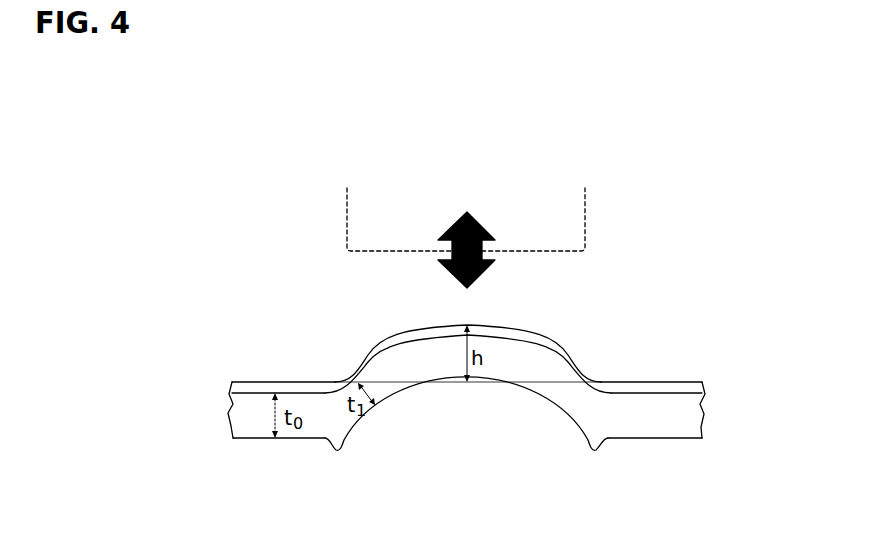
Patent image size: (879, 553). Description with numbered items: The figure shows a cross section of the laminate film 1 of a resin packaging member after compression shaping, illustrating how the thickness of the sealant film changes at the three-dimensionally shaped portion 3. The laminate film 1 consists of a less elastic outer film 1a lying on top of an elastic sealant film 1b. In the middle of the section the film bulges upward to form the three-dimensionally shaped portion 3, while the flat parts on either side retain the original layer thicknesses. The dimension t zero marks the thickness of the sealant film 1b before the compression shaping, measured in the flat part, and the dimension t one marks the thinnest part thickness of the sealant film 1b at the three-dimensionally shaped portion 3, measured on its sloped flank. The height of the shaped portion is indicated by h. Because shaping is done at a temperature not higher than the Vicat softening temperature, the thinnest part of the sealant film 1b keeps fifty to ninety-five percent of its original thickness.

The laminate film 1 is at (651, 376).
The outer film 1a is at (690, 387).
The sealant film 1b is at (690, 418).
The three-dimensionally shaped portion 3 is at (378, 334).